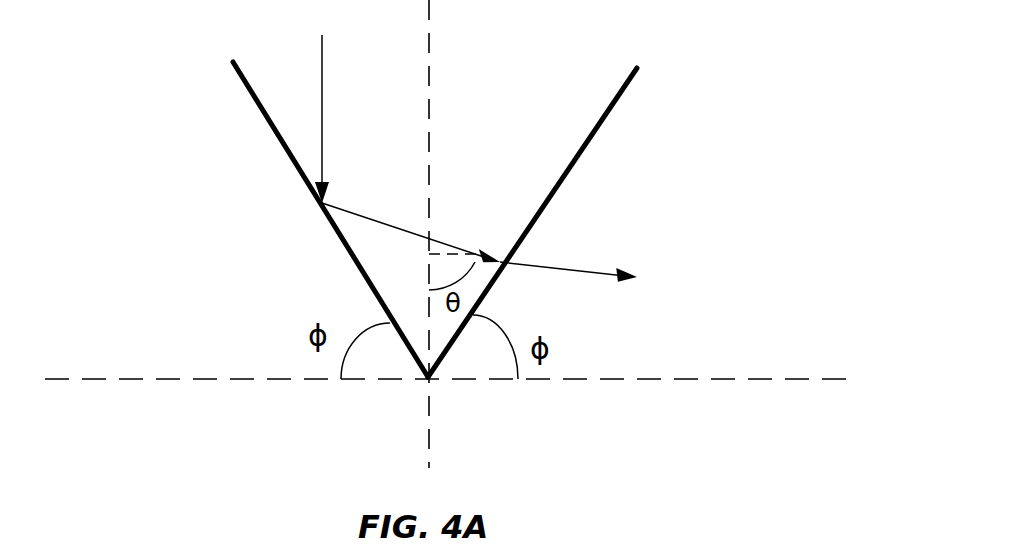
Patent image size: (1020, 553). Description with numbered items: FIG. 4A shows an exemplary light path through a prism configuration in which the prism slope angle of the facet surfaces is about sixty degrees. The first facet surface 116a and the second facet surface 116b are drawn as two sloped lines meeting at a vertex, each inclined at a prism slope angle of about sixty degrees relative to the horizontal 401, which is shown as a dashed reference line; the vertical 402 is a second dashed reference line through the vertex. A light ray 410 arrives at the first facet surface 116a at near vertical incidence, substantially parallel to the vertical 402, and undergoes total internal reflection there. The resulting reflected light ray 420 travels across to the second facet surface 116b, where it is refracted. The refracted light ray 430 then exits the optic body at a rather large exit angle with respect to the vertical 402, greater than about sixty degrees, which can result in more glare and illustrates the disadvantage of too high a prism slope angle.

The horizontal 401 is at (748, 379).
The vertical 402 is at (429, 23).
The first facet surface 116a is at (267, 122).
The second facet surface 116b is at (568, 173).
The light ray 410 is at (322, 83).
The reflected light ray 420 is at (383, 222).
The refracted light ray 430 is at (565, 273).